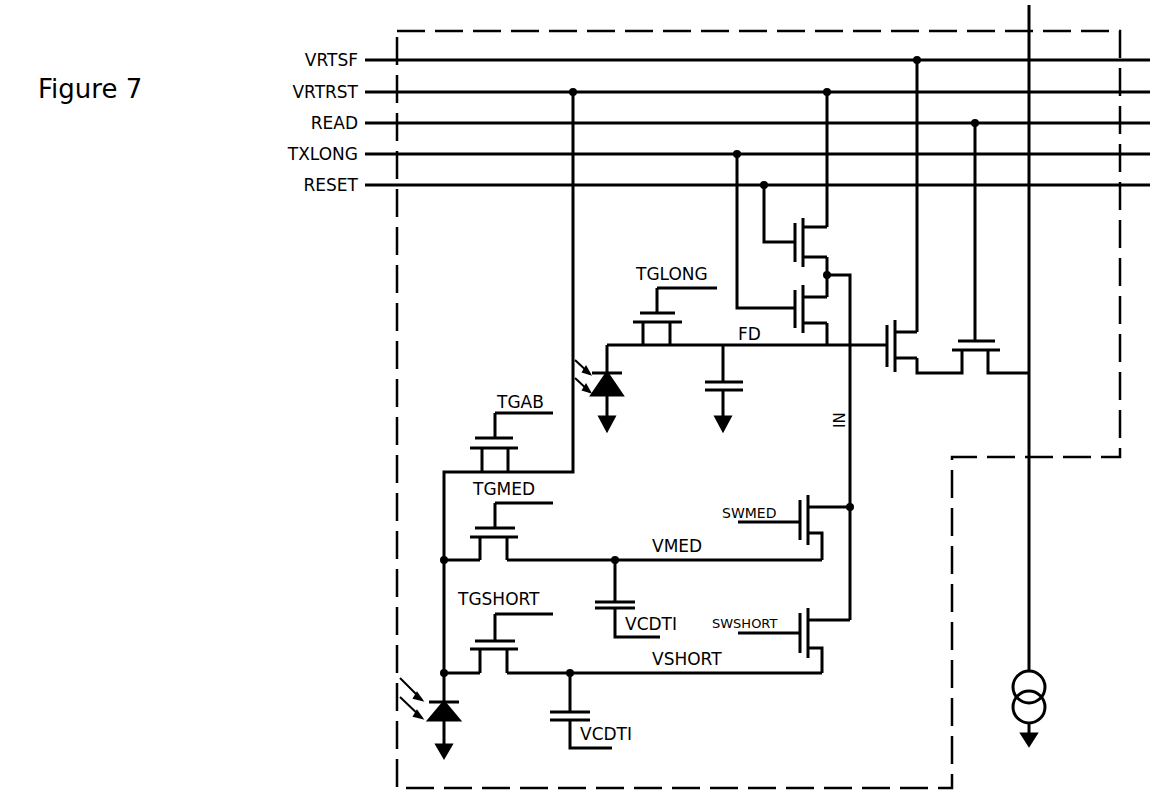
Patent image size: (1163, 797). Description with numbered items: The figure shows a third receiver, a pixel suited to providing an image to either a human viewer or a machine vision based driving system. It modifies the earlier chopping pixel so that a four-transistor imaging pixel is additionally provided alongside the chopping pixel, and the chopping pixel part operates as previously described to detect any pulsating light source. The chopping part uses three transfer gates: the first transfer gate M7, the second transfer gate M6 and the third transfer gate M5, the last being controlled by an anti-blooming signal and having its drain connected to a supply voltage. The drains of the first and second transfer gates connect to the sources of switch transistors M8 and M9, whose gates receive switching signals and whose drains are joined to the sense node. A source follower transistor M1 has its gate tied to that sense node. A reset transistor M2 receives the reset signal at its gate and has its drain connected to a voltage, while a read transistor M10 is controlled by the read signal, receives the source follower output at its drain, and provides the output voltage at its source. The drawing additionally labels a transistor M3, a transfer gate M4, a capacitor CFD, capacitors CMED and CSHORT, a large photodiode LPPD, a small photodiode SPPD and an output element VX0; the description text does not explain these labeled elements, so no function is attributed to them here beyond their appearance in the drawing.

The source follower transistor M1 is at (923, 216).
The reset transistor M2 is at (816, 194).
The long transfer gate transistor M3 is at (816, 315).
The large photodiode transfer gate M4 is at (675, 332).
The third transfer gate M5 is at (511, 442).
The second transfer gate M6 is at (511, 531).
The first transfer gate M7 is at (511, 643).
The switch transistor M8 is at (794, 522).
The switch transistor M9 is at (794, 635).
The read transistor M10 is at (979, 248).
The floating diffusion capacitor CFD is at (739, 387).
The medium storage capacitor CMED is at (635, 598).
The short storage capacitor CSHORT is at (600, 710).
The large pinned photodiode LPPD is at (624, 387).
The small pinned photodiode SPPD is at (454, 717).
The bias current source VX0 is at (1015, 375).